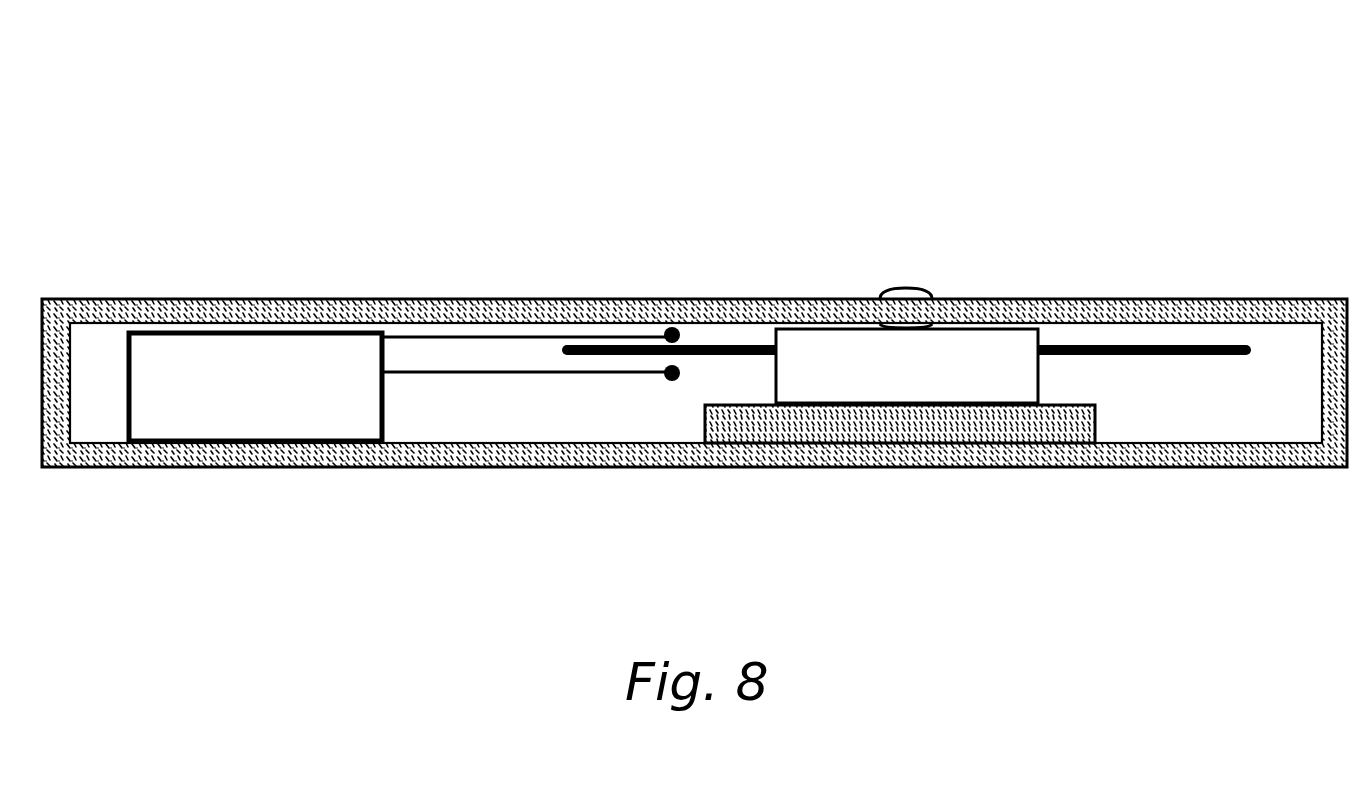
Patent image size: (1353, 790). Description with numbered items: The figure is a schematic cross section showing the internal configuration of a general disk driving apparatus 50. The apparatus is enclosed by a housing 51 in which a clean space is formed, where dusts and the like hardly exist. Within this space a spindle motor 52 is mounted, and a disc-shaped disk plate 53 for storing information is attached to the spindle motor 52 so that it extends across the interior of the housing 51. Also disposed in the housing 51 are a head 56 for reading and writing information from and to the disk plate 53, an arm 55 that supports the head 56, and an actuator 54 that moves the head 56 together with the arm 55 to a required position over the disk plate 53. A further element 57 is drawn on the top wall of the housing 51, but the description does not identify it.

The disk driving apparatus 50 is at (622, 53).
The housing 51 is at (1017, 298).
The spindle motor 52 is at (893, 378).
The disk plate 53 is at (1140, 345).
The actuator 54 is at (216, 360).
The arm 55 is at (470, 371).
The head 56 is at (674, 372).
The lens window 57 is at (906, 287).